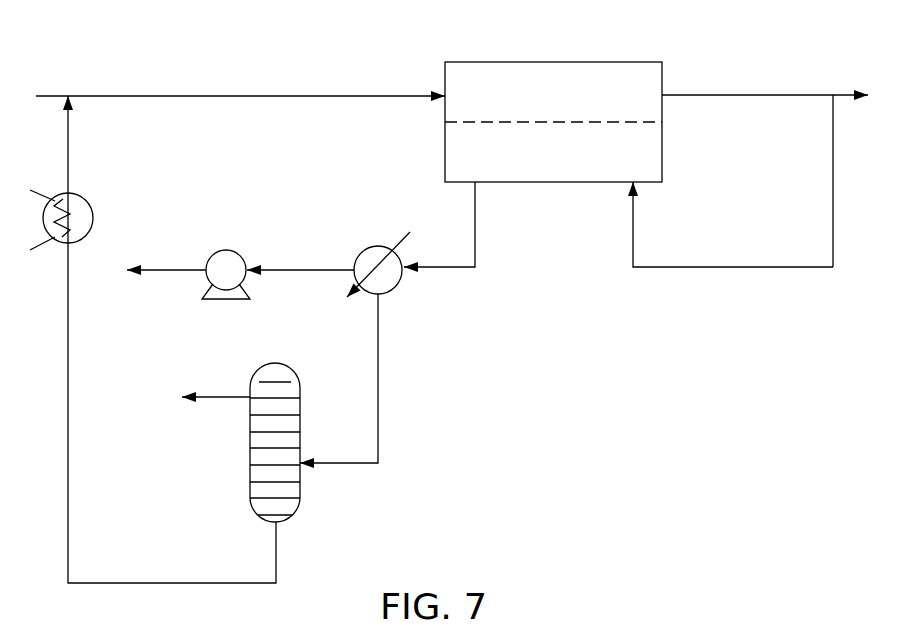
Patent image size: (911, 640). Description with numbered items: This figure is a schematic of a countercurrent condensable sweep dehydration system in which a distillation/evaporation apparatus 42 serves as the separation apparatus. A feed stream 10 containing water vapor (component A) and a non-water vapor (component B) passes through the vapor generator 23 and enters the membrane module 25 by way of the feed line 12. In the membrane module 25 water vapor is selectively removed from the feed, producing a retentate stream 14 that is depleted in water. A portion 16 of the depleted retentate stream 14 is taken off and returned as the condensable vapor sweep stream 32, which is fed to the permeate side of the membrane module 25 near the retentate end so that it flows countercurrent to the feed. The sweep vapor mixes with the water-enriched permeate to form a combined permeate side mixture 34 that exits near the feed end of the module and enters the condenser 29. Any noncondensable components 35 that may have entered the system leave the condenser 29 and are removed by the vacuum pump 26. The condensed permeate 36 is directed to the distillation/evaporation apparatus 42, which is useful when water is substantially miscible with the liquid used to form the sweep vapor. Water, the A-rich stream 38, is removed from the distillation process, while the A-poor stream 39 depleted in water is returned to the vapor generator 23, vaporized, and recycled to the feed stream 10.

The feed stream 10 is at (138, 81).
The feed line to membrane separator 12 is at (342, 84).
The retentate stream 14 is at (765, 83).
The portion of the depleted retentate stream 16 is at (815, 181).
The vapor generator 23 is at (85, 200).
The membrane module 25 is at (560, 62).
The vacuum pump 26 is at (226, 250).
The condenser 29 is at (395, 287).
The condensable vapor sweep stream 32 is at (730, 224).
The combined permeate side mixture 34 is at (439, 227).
The stream of noncondensable components 35 is at (300, 255).
The condensed permeate 36 is at (339, 381).
The stream enriched in water vapor 38 is at (167, 383).
The stream depleted in water vapor 39 is at (169, 339).
The distillation/evaporation apparatus 42 is at (277, 362).